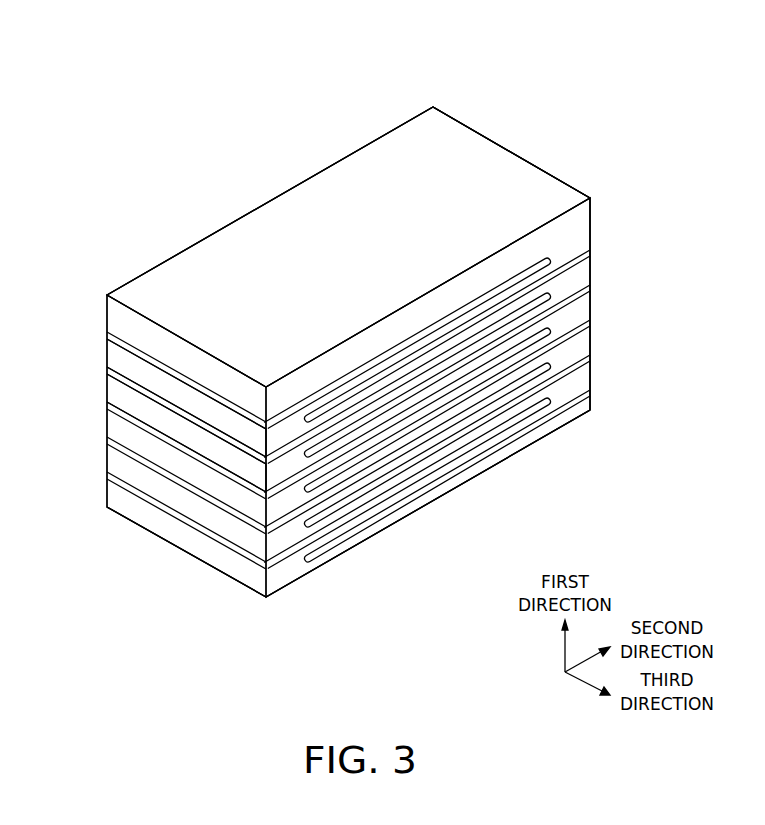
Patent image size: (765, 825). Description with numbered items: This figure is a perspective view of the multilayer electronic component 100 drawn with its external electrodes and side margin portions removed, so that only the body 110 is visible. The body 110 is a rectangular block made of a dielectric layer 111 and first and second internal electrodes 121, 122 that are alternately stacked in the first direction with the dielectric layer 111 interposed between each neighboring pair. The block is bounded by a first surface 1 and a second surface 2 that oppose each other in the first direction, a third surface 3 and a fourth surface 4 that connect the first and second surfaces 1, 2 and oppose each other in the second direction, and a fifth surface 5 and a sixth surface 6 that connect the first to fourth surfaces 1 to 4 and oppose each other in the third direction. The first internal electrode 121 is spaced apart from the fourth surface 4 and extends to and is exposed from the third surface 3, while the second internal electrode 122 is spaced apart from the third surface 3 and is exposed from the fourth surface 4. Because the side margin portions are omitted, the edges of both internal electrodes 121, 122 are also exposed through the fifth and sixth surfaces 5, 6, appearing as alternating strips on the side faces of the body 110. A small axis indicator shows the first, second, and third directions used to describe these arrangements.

The multilayer electronic component 100 is at (107, 23).
The body 110 is at (324, 205).
The dielectric layer 111 is at (132, 432).
The first internal electrode 121 is at (130, 384).
The second internal electrode 122 is at (580, 297).
The first surface 1 is at (389, 524).
The second surface 2 is at (387, 158).
The third surface 3 is at (152, 519).
The fourth surface 4 is at (508, 176).
The fifth surface 5 is at (173, 268).
The sixth surface 6 is at (570, 397).